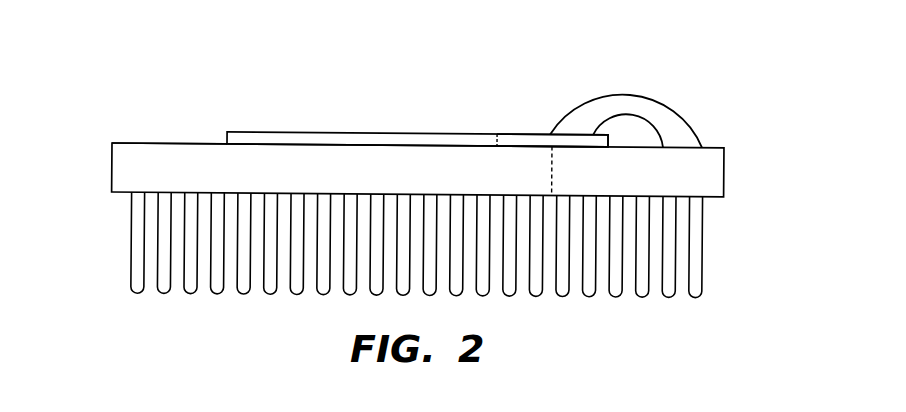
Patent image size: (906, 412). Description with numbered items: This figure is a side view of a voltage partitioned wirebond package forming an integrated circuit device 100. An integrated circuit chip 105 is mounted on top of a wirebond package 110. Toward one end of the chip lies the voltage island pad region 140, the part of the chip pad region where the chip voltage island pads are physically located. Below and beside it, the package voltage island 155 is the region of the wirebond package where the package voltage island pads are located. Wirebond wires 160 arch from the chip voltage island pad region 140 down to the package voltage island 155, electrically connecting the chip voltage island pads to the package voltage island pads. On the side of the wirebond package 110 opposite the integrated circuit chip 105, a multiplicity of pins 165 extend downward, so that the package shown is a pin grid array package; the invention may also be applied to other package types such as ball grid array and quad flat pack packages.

The integrated circuit device 100 is at (189, 54).
The integrated circuit chip 105 is at (297, 131).
The wirebond package 110 is at (155, 143).
The voltage island pad region 140 is at (520, 141).
The package voltage island 155 is at (700, 165).
The wirebond wires 160 is at (658, 102).
The pins 165 is at (163, 228).